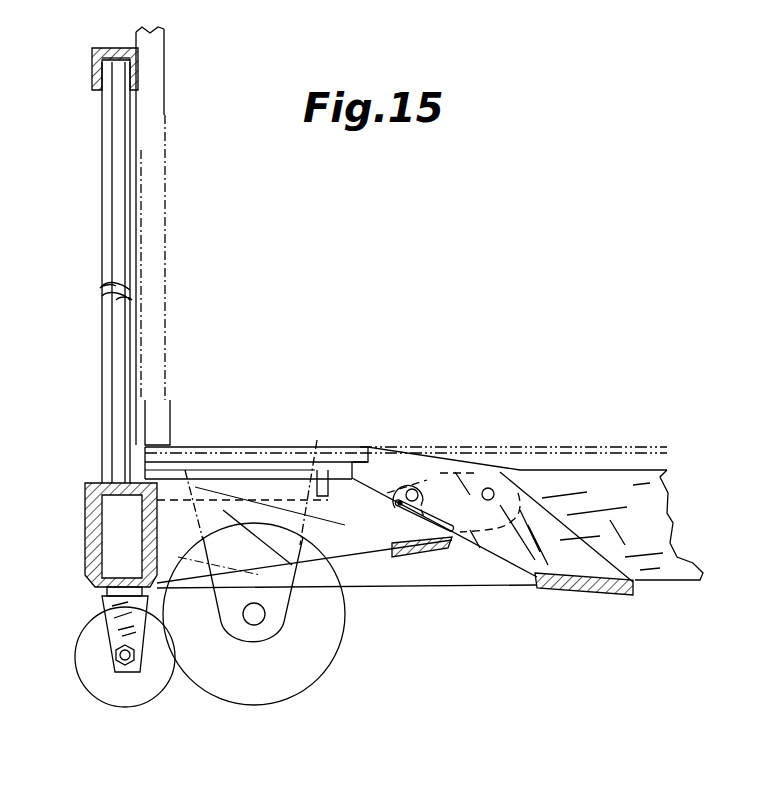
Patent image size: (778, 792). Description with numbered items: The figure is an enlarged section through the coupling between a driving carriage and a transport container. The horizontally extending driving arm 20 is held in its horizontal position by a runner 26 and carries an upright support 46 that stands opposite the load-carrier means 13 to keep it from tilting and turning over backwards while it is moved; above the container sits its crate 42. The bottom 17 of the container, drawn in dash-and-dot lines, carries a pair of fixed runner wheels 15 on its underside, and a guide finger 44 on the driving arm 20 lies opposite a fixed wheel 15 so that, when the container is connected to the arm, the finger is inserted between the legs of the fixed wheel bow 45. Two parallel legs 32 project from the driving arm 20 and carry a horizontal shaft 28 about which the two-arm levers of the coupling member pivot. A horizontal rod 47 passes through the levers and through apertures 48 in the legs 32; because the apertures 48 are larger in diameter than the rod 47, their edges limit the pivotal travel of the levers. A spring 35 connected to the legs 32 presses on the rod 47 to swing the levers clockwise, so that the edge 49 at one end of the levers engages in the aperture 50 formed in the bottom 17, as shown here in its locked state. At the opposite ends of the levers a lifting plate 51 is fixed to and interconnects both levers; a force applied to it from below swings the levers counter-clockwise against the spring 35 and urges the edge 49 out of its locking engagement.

The crate 42 is at (148, 103).
The upright support 46 is at (105, 133).
The driving arm 20 is at (87, 539).
The runner 26 is at (115, 688).
The fixed runner wheel 15 is at (283, 658).
The guide finger 44 is at (190, 468).
The load-carrier means 13 is at (251, 458).
The bottom 17 is at (282, 453).
The horizontal shaft 28 is at (493, 489).
The edge 49 is at (371, 446).
The spring 35 is at (460, 482).
The leg 32 is at (378, 542).
The aperture 48 is at (398, 512).
The aperture 50 is at (411, 488).
The horizontal rod 47 is at (401, 500).
The lifting plate 51 is at (573, 592).
The fixed wheel bow 45 is at (292, 565).